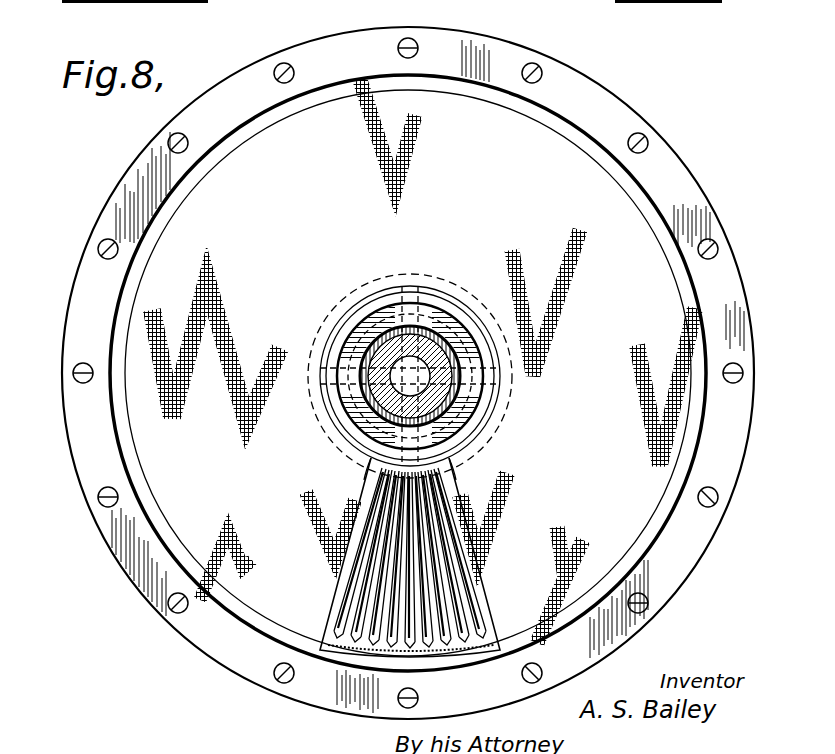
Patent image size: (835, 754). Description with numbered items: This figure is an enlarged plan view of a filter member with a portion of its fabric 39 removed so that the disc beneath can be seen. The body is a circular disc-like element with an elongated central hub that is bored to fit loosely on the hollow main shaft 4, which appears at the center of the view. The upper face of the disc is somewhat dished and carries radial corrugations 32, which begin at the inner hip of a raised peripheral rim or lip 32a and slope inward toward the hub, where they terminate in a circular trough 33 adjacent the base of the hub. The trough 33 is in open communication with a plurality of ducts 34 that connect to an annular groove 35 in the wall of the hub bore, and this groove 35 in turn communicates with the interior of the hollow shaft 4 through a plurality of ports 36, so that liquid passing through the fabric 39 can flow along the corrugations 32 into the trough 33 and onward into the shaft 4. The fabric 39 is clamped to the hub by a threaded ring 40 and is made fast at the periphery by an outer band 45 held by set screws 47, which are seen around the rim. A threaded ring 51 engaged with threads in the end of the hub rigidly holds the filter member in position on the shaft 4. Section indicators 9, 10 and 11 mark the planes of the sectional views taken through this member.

The main shaft 4 is at (441, 401).
The section line 9- 9 is at (35, 382).
The section line 10- 10 is at (293, 613).
The section line 11- 11 is at (338, 475).
The radial corrugations 32 is at (336, 220).
The raised peripheral rim or lip 32a is at (355, 660).
The circular trough 33 is at (335, 386).
The ducts 34 is at (314, 333).
The annular groove 35 is at (374, 316).
The ports 36 is at (455, 304).
The fabric 39 is at (640, 482).
The threaded ring 40 is at (340, 398).
The outer band 45 is at (668, 178).
The set screws 47 is at (722, 241).
The threaded ring 51 is at (438, 414).